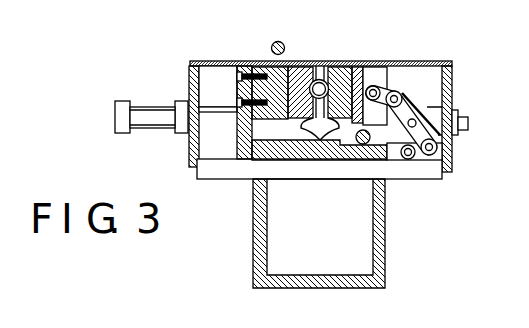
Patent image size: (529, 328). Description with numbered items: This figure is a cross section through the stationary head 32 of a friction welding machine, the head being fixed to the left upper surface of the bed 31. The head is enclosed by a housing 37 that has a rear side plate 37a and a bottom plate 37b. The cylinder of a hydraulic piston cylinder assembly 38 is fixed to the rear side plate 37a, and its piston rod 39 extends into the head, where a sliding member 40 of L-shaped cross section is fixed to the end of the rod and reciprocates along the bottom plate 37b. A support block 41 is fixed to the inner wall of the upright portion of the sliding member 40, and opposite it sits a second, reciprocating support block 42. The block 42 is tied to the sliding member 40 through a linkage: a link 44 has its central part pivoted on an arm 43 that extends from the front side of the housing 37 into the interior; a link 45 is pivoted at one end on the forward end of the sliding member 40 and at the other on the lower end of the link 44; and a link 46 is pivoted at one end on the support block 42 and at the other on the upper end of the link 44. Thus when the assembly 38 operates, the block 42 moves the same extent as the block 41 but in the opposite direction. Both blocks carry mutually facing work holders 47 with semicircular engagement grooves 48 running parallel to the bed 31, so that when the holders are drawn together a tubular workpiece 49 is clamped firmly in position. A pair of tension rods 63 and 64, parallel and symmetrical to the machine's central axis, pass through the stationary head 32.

The bed 31 is at (256, 258).
The stationary head 32 is at (205, 57).
The housing 37 is at (432, 60).
The rear side plate 37a is at (190, 80).
The bottom plate 37b is at (218, 172).
The hydraulic piston cylinder assembly 38 is at (149, 119).
The piston rod 39 is at (222, 117).
The sliding member 40 is at (268, 150).
The support block 41 is at (275, 63).
The support block 42 is at (373, 75).
The arm 43 is at (430, 118).
The link 44 is at (442, 135).
The link 45 is at (422, 158).
The link 46 is at (392, 89).
The work holders 47 is at (318, 67).
The engagement grooves 48 is at (321, 100).
The tubular workpiece 49 is at (330, 67).
The tension rod 63 is at (284, 45).
The tension rod 64 is at (365, 145).